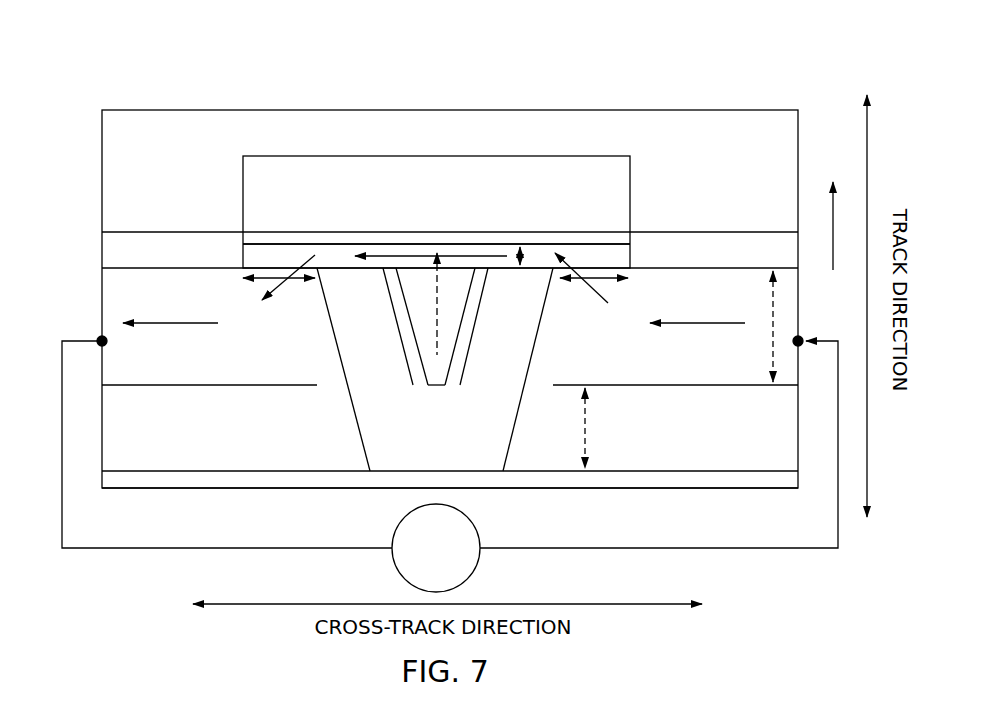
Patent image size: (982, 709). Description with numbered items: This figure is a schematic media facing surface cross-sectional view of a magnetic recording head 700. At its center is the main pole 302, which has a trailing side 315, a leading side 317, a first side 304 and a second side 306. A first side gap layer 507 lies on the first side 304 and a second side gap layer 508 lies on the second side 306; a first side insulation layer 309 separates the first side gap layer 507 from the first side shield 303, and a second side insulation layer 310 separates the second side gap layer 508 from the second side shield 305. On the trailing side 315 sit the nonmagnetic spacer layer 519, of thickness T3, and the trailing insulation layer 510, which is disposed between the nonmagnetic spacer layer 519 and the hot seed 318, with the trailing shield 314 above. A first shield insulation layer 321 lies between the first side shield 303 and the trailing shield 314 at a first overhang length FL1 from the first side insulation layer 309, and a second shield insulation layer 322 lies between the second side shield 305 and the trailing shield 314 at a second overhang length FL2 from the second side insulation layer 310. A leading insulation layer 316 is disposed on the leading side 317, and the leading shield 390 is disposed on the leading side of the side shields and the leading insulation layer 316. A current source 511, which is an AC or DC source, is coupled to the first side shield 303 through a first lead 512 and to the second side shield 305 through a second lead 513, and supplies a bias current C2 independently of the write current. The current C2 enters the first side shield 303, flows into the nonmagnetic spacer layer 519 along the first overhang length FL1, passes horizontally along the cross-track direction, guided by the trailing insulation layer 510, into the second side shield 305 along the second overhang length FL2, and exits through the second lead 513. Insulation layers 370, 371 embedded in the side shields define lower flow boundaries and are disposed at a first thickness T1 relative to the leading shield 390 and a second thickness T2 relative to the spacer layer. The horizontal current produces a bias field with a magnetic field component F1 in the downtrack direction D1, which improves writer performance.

The magnetic recording head 700 is at (128, 58).
The trailing shield 314 is at (724, 174).
The trailing side 315 is at (437, 210).
The hot seed 318 is at (347, 219).
The second shield insulation layer 322 is at (142, 260).
The first shield insulation layer 321 is at (789, 263).
The trailing insulation layer 510 is at (592, 238).
The nonmagnetic spacer layer 519 is at (533, 258).
The second side shield 305 is at (187, 303).
The first side shield 303 is at (729, 306).
The main pole 302 is at (455, 305).
The second side 306 is at (303, 332).
The first side 304 is at (570, 312).
The second side gap layer 508 is at (362, 332).
The first side gap layer 507 is at (500, 333).
The second side insulation layer 310 is at (407, 352).
The first side insulation layer 309 is at (460, 362).
The leading insulation layer 316 is at (425, 437).
The leading side 317 is at (452, 408).
The insulation layer 371 is at (165, 388).
The insulation layer 370 is at (745, 388).
The leading shield 390 is at (705, 480).
The current source 511 is at (393, 578).
The first lead 512 is at (804, 338).
The second lead 513 is at (99, 336).
The downtrack direction D1 is at (818, 205).
The first thickness T1 is at (587, 428).
The second thickness T2 is at (770, 330).
The thickness T3 is at (518, 252).
The magnetic field component F1 is at (435, 273).
The first overhang length FL1 is at (602, 282).
The second overhang length FL2 is at (270, 275).
The current C2 is at (396, 253).